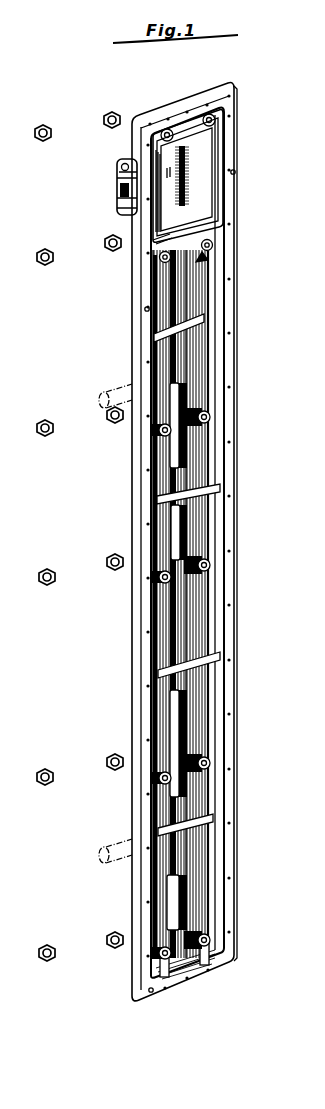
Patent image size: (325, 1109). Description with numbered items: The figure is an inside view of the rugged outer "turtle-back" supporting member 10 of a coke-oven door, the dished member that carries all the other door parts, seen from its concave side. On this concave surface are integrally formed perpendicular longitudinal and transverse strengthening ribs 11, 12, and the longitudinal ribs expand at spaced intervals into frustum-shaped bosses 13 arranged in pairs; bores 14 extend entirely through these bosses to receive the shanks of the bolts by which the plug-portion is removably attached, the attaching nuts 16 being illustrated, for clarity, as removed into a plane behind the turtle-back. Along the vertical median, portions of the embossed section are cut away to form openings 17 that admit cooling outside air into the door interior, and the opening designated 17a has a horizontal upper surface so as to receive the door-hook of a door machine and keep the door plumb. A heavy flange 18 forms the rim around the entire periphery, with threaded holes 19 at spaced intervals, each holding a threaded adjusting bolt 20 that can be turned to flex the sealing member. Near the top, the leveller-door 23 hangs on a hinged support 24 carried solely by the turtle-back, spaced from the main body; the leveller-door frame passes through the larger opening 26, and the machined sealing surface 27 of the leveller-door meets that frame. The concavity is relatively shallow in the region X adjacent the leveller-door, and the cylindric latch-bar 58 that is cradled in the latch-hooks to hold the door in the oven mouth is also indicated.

The turtle-back outer supporting member 10 is at (236, 480).
The longitudinal strengthening ribs 11 is at (168, 296).
The transverse strengthening ribs 12 is at (190, 336).
The frustum-shaped bosses 13 is at (208, 416).
The bores 14 is at (208, 418).
The nuts 16 is at (50, 568).
The openings 17 is at (180, 392).
The door-hook opening 17a is at (176, 528).
The flange 18 is at (196, 103).
The threaded holes 19 is at (235, 170).
The adjusting bolt 20 is at (235, 172).
The leveller-door 23 is at (173, 207).
The hinged support 24 is at (117, 190).
The opening 26 is at (157, 236).
The machined sealing surface of the leveller-door 27 is at (190, 146).
The latch-bar 58 is at (122, 388).
The shallow concavity region X is at (208, 256).